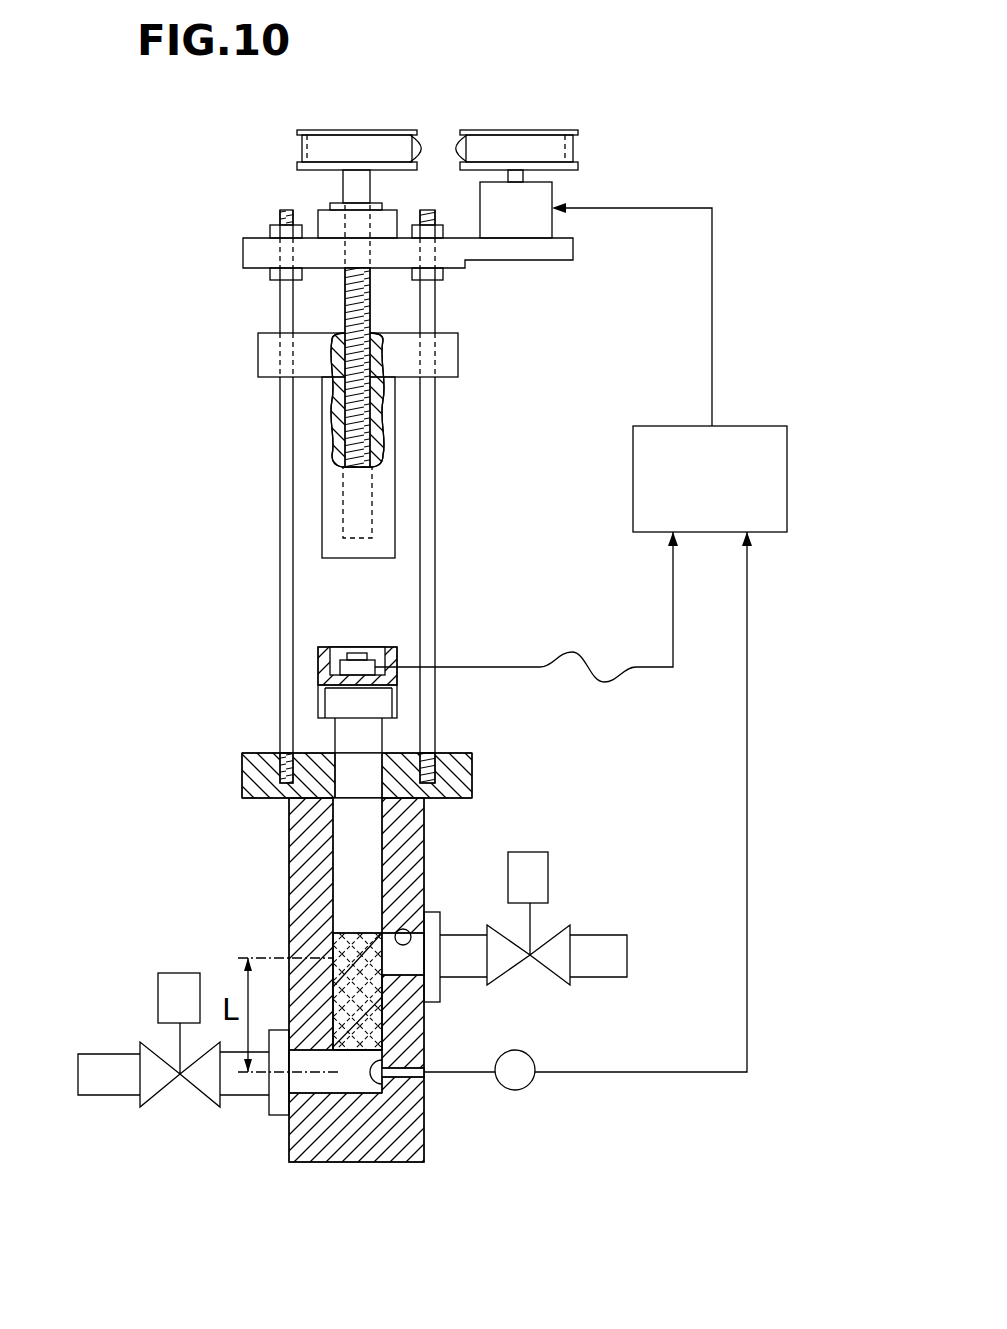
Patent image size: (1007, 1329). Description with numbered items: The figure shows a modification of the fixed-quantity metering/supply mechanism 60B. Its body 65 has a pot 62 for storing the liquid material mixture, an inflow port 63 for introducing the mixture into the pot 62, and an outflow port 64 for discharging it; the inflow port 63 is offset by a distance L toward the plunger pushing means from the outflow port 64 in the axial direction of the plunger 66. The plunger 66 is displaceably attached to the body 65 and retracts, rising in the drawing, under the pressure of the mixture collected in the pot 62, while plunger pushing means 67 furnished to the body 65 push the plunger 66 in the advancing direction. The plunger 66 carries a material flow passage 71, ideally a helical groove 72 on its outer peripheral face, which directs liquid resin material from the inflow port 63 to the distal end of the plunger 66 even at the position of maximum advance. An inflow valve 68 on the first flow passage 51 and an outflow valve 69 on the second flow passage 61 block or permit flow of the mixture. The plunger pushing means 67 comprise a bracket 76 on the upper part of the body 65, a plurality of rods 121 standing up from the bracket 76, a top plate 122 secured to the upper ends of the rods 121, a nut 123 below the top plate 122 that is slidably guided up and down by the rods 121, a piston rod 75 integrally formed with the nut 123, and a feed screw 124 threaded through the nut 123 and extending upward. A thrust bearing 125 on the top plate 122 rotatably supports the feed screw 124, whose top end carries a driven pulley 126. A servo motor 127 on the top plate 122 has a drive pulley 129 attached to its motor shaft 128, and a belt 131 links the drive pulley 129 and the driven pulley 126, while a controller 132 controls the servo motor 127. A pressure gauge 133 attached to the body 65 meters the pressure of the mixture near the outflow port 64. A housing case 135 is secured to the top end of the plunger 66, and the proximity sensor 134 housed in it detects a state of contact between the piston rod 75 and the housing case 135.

The first flow passage 51 is at (593, 940).
The fixed-quantity metering/supply mechanism 60B is at (760, 282).
The second flow passage 61 is at (97, 1092).
The pot 62 is at (424, 1085).
The inflow port 63 is at (400, 929).
The outflow port 64 is at (325, 1085).
The body 65 is at (358, 1003).
The plunger 66 is at (345, 905).
The plunger pushing means 67 is at (240, 467).
The inflow valve 68 is at (548, 975).
The outflow valve 69 is at (200, 1093).
The material flow passage 71 is at (428, 991).
The helical groove 72 is at (375, 995).
The piston rod 75 is at (385, 485).
The bracket 76 is at (250, 776).
The rods 121 is at (285, 582).
The top plate 122 is at (243, 253).
The nut 123 is at (450, 355).
The feed screw 124 is at (340, 312).
The thrust bearing 125 is at (325, 213).
The driven pulley 126 is at (425, 130).
The servo motor 127 is at (552, 192).
The motor shaft 128 is at (525, 173).
The drive pulley 129 is at (455, 130).
The belt 131 is at (440, 130).
The controller 132 is at (672, 425).
The pressure gauge 133 is at (515, 1092).
The proximity sensor 134 is at (360, 653).
The housing case 135 is at (318, 668).